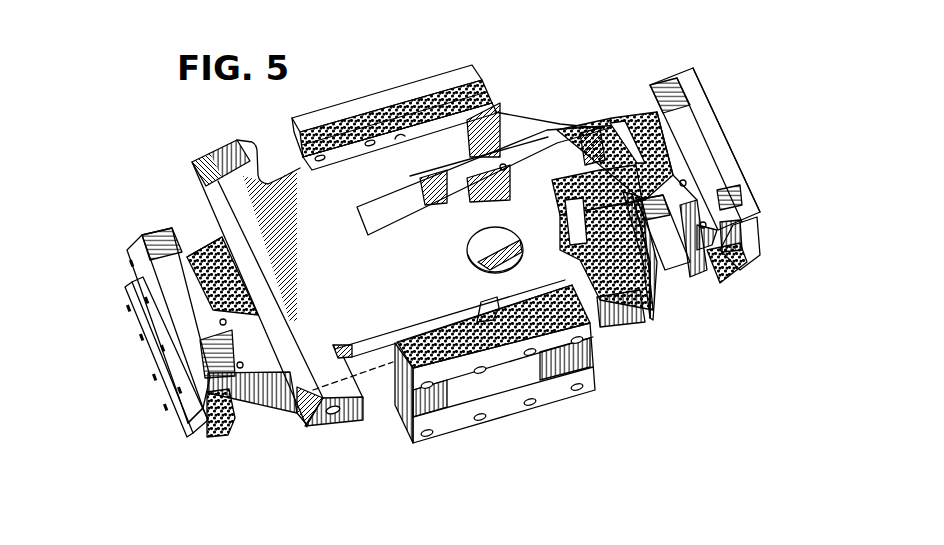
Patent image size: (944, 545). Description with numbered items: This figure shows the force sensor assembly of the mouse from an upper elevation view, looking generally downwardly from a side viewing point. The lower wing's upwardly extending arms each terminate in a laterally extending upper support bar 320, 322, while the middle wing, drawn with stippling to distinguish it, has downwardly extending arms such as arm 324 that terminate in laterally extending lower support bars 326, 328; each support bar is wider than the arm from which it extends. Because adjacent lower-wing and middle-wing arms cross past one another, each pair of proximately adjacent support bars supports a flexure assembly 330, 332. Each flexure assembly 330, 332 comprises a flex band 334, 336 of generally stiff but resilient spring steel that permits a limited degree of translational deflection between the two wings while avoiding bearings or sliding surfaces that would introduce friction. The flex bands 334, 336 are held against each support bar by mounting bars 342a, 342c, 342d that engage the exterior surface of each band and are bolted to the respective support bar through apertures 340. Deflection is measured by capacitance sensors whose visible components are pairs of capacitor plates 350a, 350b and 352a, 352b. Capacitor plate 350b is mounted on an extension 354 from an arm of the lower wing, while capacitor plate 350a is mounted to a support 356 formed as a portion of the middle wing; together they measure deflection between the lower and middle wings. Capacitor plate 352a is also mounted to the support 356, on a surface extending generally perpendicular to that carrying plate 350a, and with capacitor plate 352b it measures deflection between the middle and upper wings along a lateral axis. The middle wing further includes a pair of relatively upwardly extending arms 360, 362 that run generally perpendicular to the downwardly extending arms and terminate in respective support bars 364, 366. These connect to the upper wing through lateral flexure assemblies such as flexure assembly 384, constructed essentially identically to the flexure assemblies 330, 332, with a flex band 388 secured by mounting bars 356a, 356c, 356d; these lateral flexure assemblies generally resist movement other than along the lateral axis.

The laterally extending upper support bar 320 is at (742, 176).
The laterally extending upper support bar 322 is at (610, 120).
The downwardly extending arm 324 is at (207, 240).
The laterally extending lower support bar 326 is at (727, 277).
The laterally extending lower support bar 328 is at (247, 458).
The flexure assembly 330 is at (758, 235).
The flexure assembly 332 is at (122, 352).
The flex band 334 is at (752, 243).
The flex band 336 is at (200, 408).
The apertures 340 is at (577, 392).
The mounting bar 342a is at (740, 177).
The mounting bar 342c is at (170, 330).
The mounting bar 342d is at (177, 417).
The capacitor plate 350a is at (650, 320).
The capacitor plate 350b is at (670, 297).
The capacitor plate 352a is at (712, 158).
The capacitor plate 352b is at (637, 157).
The extension 354 is at (685, 285).
The support 356 is at (622, 295).
The mounting bar 356a is at (398, 92).
The mounting bar 356c is at (502, 367).
The mounting bar 356d is at (443, 437).
The upwardly extending arm 360 is at (497, 297).
The upwardly extending arm 362 is at (493, 103).
The support bar 364 is at (443, 342).
The support bar 366 is at (483, 88).
The lateral flexure assembly 384 is at (463, 396).
The flex band 388 is at (540, 375).